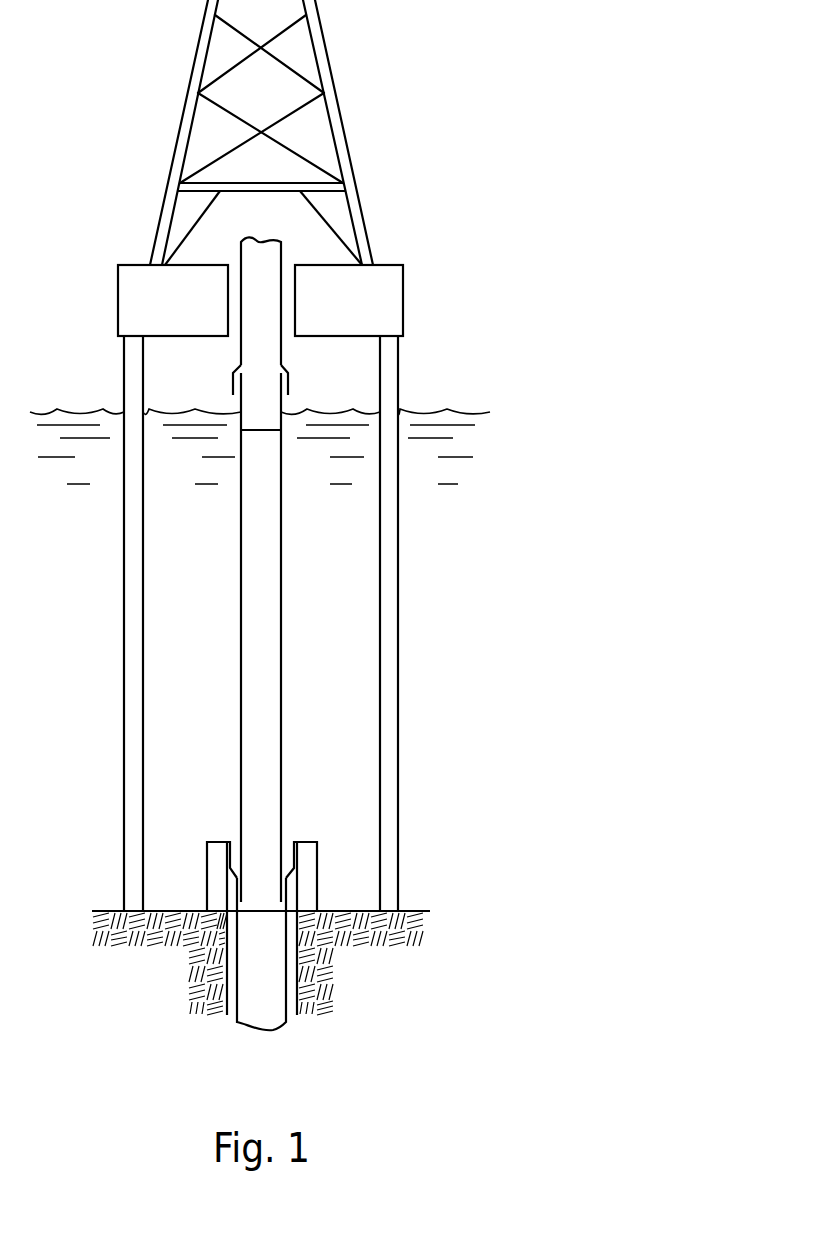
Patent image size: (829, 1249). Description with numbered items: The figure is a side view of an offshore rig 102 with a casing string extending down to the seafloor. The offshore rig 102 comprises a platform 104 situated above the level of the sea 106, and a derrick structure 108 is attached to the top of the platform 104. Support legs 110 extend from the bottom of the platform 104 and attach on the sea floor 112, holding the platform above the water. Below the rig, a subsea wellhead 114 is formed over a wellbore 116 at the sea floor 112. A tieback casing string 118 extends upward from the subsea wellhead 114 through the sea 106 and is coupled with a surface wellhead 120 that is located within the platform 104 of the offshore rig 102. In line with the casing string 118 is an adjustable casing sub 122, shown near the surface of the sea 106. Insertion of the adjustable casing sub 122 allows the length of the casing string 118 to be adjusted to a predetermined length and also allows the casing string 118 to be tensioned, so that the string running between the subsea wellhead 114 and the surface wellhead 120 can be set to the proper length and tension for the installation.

The offshore rig 102 is at (390, 193).
The platform 104 is at (395, 292).
The sea 106 is at (443, 408).
The derrick structure 108 is at (331, 68).
The support legs 110 is at (399, 705).
The sea floor 112 is at (109, 910).
The subsea wellhead 114 is at (320, 863).
The wellbore 116 is at (287, 1017).
The tieback casing string 118 is at (237, 658).
The surface wellhead 120 is at (257, 232).
The adjustable casing sub 122 is at (253, 408).